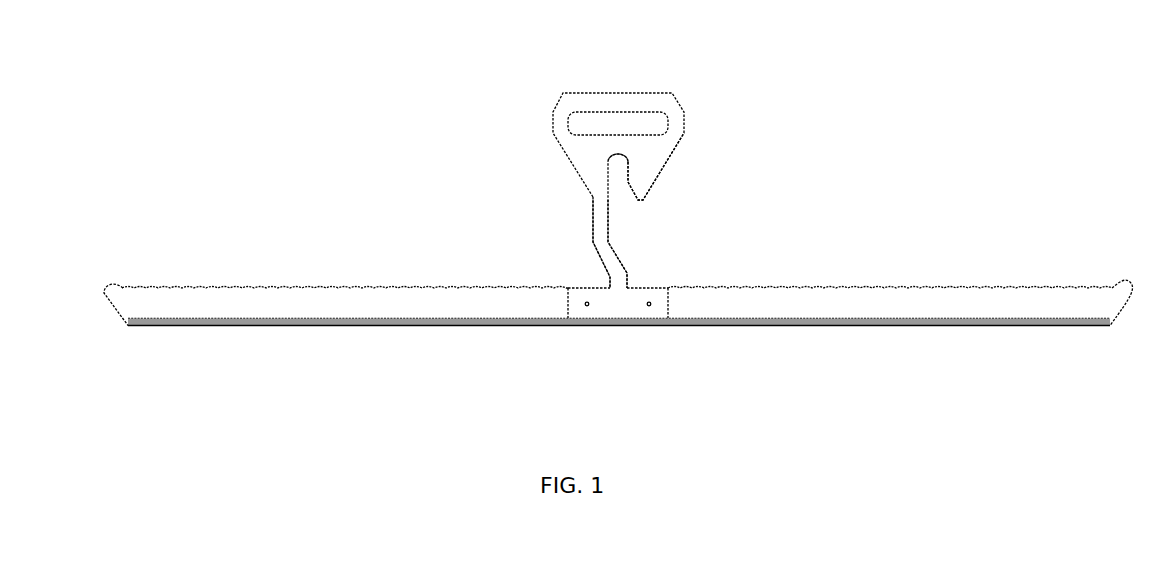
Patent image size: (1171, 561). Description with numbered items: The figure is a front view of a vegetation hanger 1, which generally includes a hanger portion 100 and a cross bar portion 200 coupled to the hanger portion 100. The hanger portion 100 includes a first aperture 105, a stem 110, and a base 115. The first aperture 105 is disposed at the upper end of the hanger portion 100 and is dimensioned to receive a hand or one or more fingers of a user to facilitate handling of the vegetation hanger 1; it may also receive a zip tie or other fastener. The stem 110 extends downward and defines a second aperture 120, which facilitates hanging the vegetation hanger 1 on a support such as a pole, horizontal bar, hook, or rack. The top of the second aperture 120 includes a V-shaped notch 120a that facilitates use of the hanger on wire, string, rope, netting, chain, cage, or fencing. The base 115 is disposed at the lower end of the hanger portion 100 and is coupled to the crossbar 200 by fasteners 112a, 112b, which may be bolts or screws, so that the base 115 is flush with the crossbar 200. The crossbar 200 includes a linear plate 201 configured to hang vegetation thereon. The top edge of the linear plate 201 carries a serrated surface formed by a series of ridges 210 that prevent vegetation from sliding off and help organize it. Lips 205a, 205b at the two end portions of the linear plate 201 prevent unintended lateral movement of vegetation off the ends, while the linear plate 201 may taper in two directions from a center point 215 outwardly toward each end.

The vegetation hanger 1 is at (1014, 83).
The hanger portion 100 is at (746, 117).
The first aperture 105 is at (575, 122).
The stem 110 is at (612, 253).
The fastener 112a is at (587, 309).
The fastener 112b is at (651, 308).
The base 115 is at (628, 305).
The second aperture 120 is at (623, 182).
The V-shaped notch 120a is at (617, 155).
The cross bar portion 200 is at (909, 352).
The linear plate 201 is at (477, 300).
The lip 205a is at (1122, 298).
The lip 205b is at (123, 298).
The ridges 210 is at (263, 288).
The center point 215 is at (322, 322).